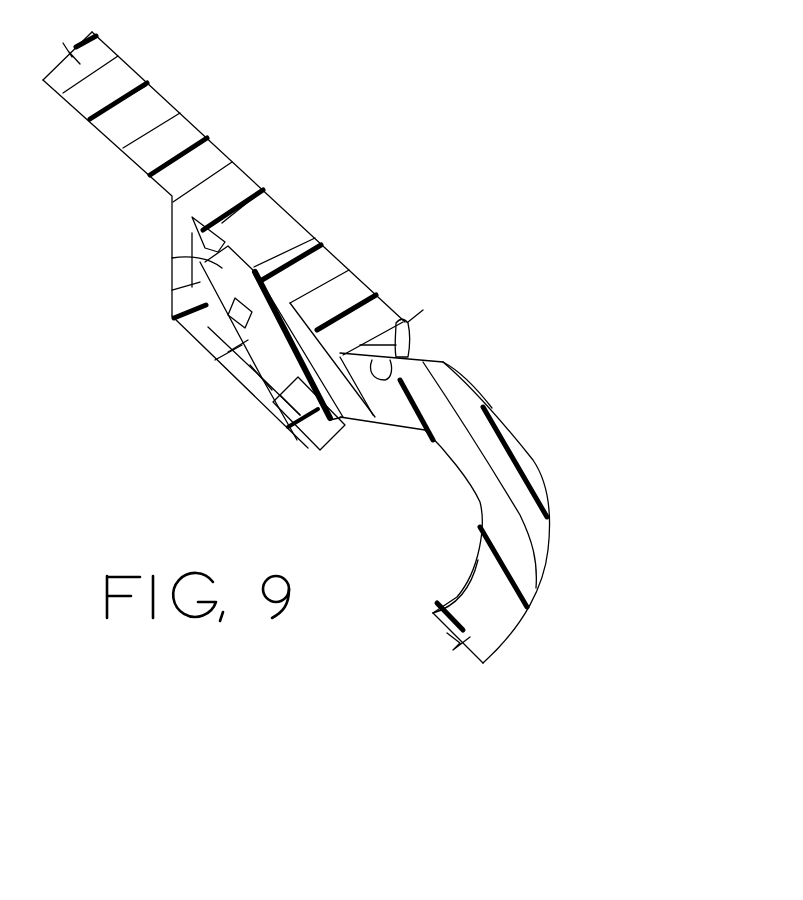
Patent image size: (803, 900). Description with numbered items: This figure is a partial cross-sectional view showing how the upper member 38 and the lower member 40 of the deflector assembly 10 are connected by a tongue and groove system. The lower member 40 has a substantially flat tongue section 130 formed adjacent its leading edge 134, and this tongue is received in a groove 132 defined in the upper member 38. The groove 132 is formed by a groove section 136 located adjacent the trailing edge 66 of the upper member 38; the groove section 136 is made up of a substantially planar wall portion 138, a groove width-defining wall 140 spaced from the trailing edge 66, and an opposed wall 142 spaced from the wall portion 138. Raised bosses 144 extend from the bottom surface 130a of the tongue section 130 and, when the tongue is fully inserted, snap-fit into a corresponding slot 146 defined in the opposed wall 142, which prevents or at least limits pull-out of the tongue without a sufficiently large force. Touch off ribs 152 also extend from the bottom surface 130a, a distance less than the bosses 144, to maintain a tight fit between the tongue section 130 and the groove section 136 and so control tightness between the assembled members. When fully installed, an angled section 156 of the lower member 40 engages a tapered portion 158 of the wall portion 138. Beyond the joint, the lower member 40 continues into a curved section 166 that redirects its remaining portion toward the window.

The deflector assembly 10 is at (367, 260).
The upper member 38 is at (164, 93).
The lower member 40 is at (548, 489).
The trailing edge 66 is at (409, 344).
The tongue section 130 is at (246, 277).
The bottom surface 130a is at (238, 308).
The groove 132 is at (196, 246).
The leading edge 134 is at (185, 250).
The groove section 136 is at (222, 228).
The wall portion 138 is at (348, 294).
The groove width-defining wall 140 is at (180, 282).
The opposed wall 142 is at (327, 433).
The raised bosses 144 is at (266, 392).
The slot 146 is at (245, 353).
The touch off ribs 152 is at (318, 398).
The angled section 156 is at (402, 322).
The tapered portion 158 is at (388, 377).
The curved section 166 is at (547, 567).